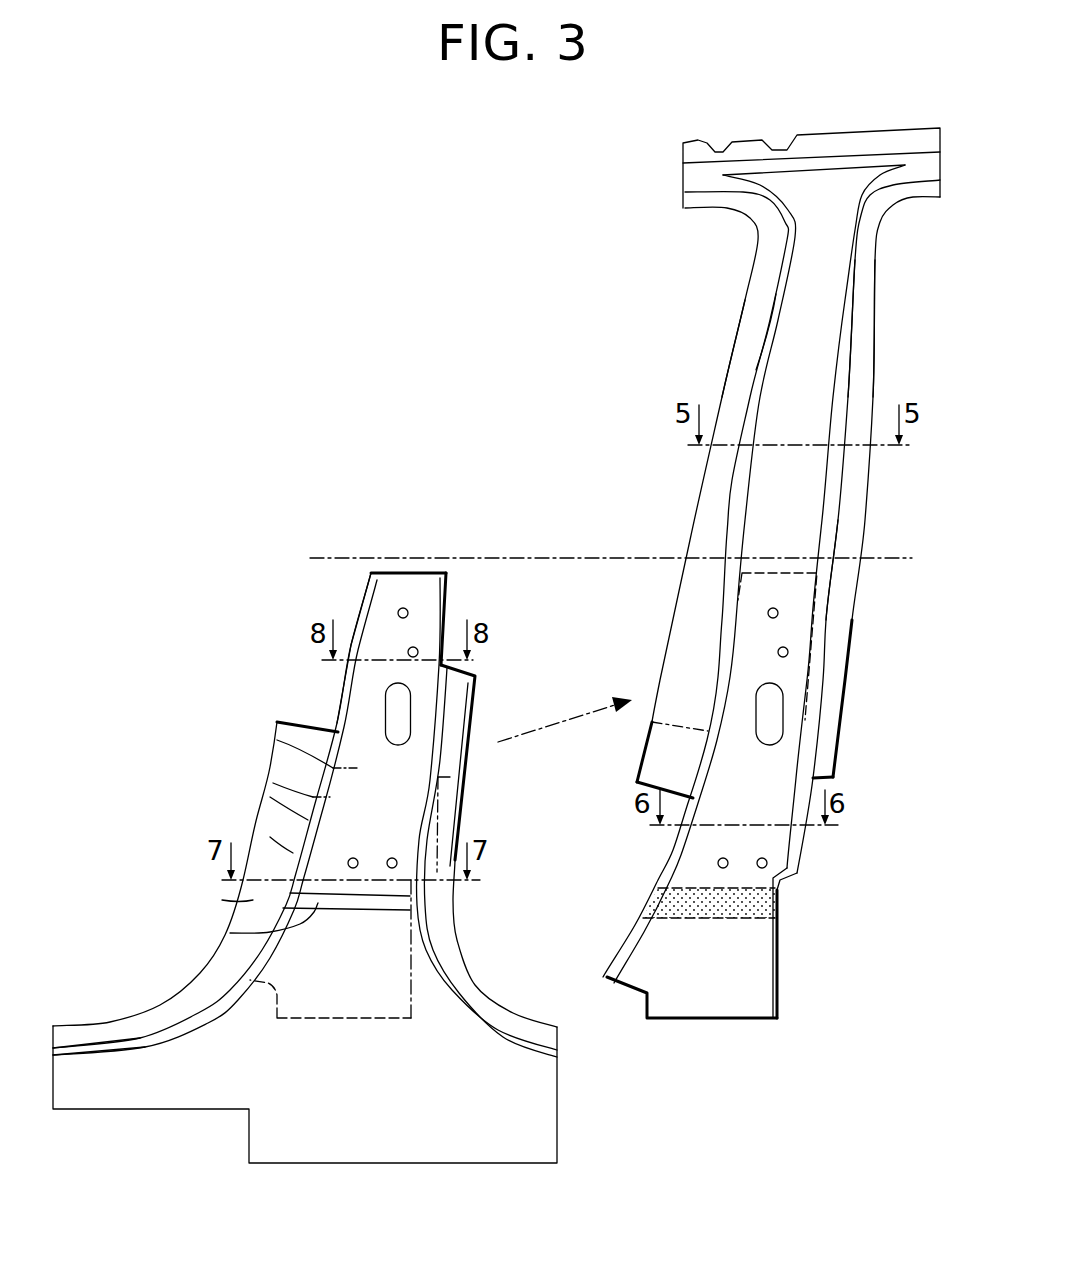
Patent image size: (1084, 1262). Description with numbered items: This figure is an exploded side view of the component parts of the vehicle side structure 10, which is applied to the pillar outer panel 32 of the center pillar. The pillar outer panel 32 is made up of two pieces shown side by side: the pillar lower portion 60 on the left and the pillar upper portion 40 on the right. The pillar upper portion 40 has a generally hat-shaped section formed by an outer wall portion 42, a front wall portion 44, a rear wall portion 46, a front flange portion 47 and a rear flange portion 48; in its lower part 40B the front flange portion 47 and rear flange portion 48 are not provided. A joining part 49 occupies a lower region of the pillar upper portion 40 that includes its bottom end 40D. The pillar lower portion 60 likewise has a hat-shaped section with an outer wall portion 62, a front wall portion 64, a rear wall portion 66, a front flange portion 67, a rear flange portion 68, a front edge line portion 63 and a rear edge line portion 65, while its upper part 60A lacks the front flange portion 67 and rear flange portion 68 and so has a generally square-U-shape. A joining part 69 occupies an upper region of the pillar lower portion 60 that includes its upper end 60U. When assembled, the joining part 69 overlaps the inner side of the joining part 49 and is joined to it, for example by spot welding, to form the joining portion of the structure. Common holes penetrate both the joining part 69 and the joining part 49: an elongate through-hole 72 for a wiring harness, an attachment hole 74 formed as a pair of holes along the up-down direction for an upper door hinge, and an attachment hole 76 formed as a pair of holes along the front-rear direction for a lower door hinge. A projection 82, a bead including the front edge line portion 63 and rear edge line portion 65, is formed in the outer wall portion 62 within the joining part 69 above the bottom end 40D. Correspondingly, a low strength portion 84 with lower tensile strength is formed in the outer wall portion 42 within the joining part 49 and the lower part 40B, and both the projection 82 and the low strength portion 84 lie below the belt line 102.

The vehicle side structure 10 is at (472, 344).
The pillar outer panel 32 is at (497, 473).
The pillar upper portion 40 is at (672, 580).
The lower part of the pillar upper portion 40B is at (833, 1017).
The bottom end of the pillar upper portion 40D is at (738, 1020).
The outer wall portion 42 is at (823, 258).
The front wall portion 44 is at (780, 300).
The rear wall portion 46 is at (847, 301).
The front flange portion 47 is at (750, 340).
The rear flange portion 48 is at (863, 357).
The joining part 49 is at (797, 567).
The pillar lower portion 60 is at (455, 582).
The upper part of the pillar lower portion 60A is at (317, 573).
The upper end of the pillar lower portion 60U is at (391, 570).
The outer wall portion 62 is at (277, 740).
The front edge line portion 63 is at (273, 783).
The front wall portion 64 is at (270, 812).
The rear edge line portion 65 is at (443, 808).
The rear wall portion 66 is at (415, 905).
The front flange portion 67 is at (222, 900).
The rear flange portion 68 is at (443, 940).
The joining part 69 is at (343, 1020).
The through-hole 72 is at (398, 712).
The attachment hole 74 is at (415, 650).
The attachment hole 76 is at (392, 857).
The projection 82 is at (230, 933).
The low strength portion 84 is at (668, 898).
The belt line 102 is at (890, 560).